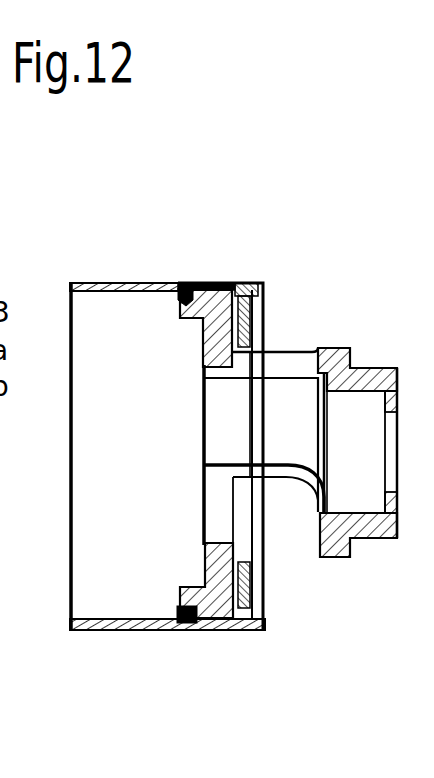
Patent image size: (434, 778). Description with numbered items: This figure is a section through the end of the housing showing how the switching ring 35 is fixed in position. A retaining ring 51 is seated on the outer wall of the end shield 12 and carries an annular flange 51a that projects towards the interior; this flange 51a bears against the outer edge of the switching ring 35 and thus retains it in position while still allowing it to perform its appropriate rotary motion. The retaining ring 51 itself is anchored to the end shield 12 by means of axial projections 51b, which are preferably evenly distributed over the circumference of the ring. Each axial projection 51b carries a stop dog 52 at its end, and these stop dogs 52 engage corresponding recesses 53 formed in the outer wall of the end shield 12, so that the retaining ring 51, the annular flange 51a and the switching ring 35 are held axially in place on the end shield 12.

The end shield 12 is at (202, 564).
The switching ring 35 is at (262, 592).
The retaining ring 51 is at (242, 284).
The annular flange 51a is at (268, 297).
The axial projections 51b is at (199, 290).
The stop dogs 52 is at (182, 290).
The recesses 53 is at (178, 622).